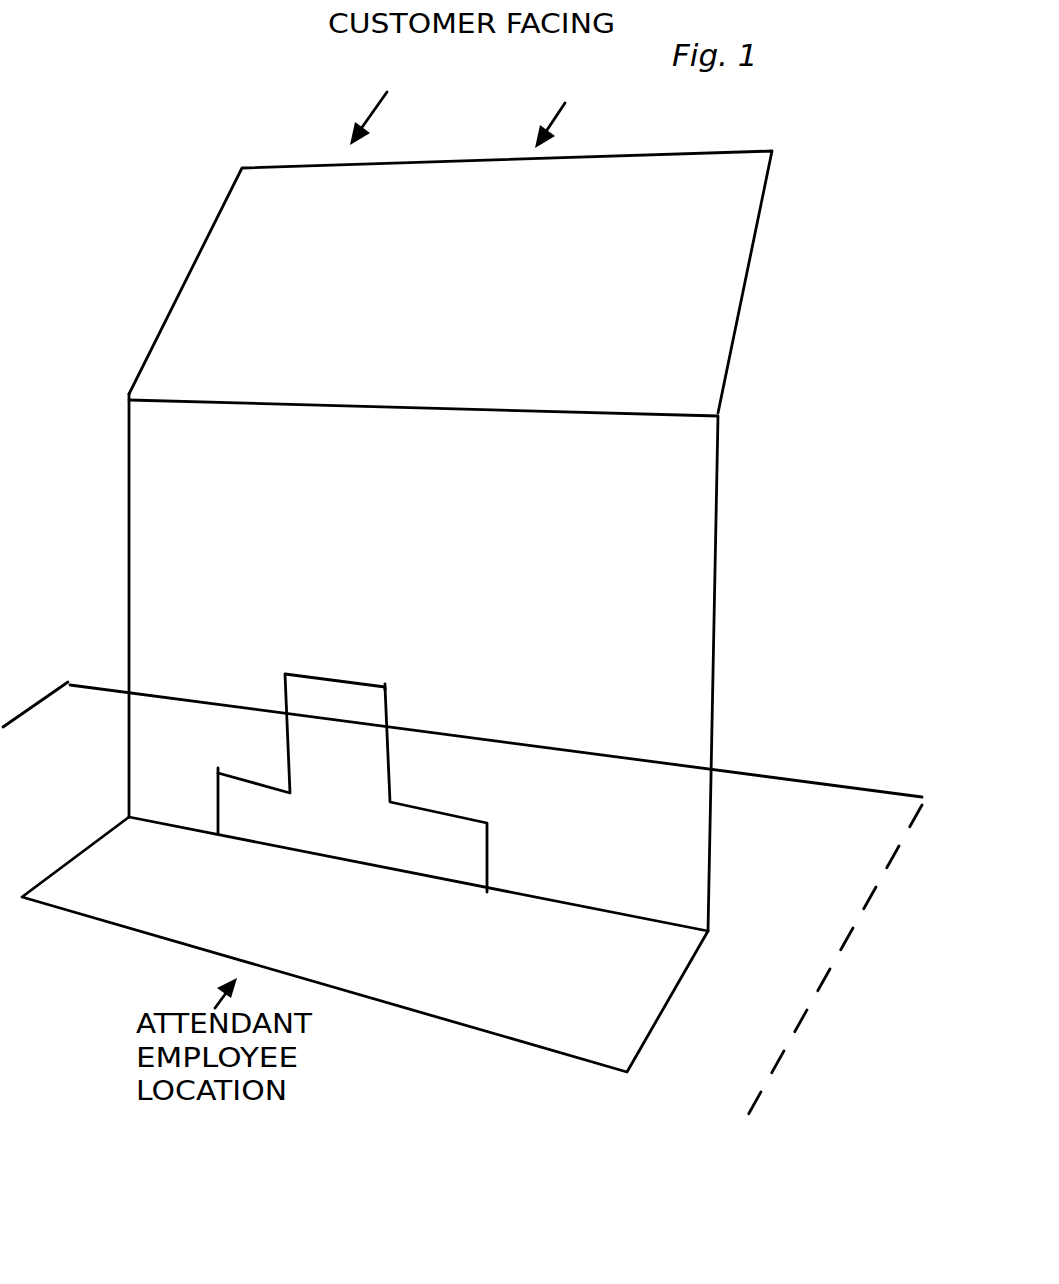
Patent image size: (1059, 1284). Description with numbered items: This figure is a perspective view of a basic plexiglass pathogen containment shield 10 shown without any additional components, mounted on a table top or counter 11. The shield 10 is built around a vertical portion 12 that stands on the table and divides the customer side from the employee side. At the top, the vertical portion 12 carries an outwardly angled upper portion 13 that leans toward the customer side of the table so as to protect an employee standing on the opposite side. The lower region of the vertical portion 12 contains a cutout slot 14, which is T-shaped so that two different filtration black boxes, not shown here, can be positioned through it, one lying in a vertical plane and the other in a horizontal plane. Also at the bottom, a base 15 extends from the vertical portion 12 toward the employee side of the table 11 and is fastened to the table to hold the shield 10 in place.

The containment shield 10 is at (427, 611).
The table top or counter 11 is at (758, 815).
The vertical portion 12 is at (688, 705).
The outwardly angled upper portion 13 is at (713, 332).
The cutout slot 14 is at (422, 847).
The base 15 is at (623, 1002).